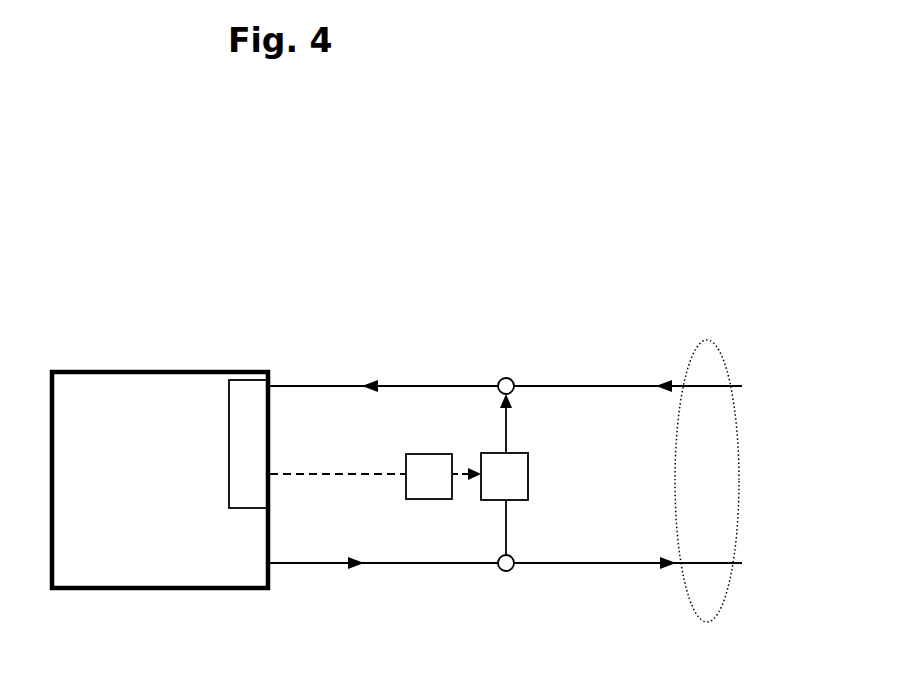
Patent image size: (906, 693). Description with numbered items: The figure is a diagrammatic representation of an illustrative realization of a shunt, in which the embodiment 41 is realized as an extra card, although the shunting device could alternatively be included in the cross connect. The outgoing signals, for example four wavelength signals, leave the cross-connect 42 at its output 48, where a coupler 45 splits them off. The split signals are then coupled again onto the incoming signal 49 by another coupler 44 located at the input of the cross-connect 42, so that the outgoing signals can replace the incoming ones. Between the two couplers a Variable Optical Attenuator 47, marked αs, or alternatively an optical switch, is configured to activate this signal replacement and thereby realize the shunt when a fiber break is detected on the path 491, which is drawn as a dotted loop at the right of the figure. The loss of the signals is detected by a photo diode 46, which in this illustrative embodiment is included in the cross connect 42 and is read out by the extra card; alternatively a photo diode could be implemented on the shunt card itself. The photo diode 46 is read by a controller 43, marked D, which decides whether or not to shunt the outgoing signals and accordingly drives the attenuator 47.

The embodiment of the shunt 41 is at (352, 280).
The cross-connect 42 is at (112, 368).
The controller 43 is at (432, 453).
The coupler 44 is at (509, 378).
The coupler 45 is at (505, 571).
The photo diode 46 is at (228, 424).
The Variable Optical Attenuator 47 is at (529, 465).
The output of the cross-connect 48 is at (272, 566).
The incoming signal 49 is at (276, 382).
The path 491 is at (718, 343).